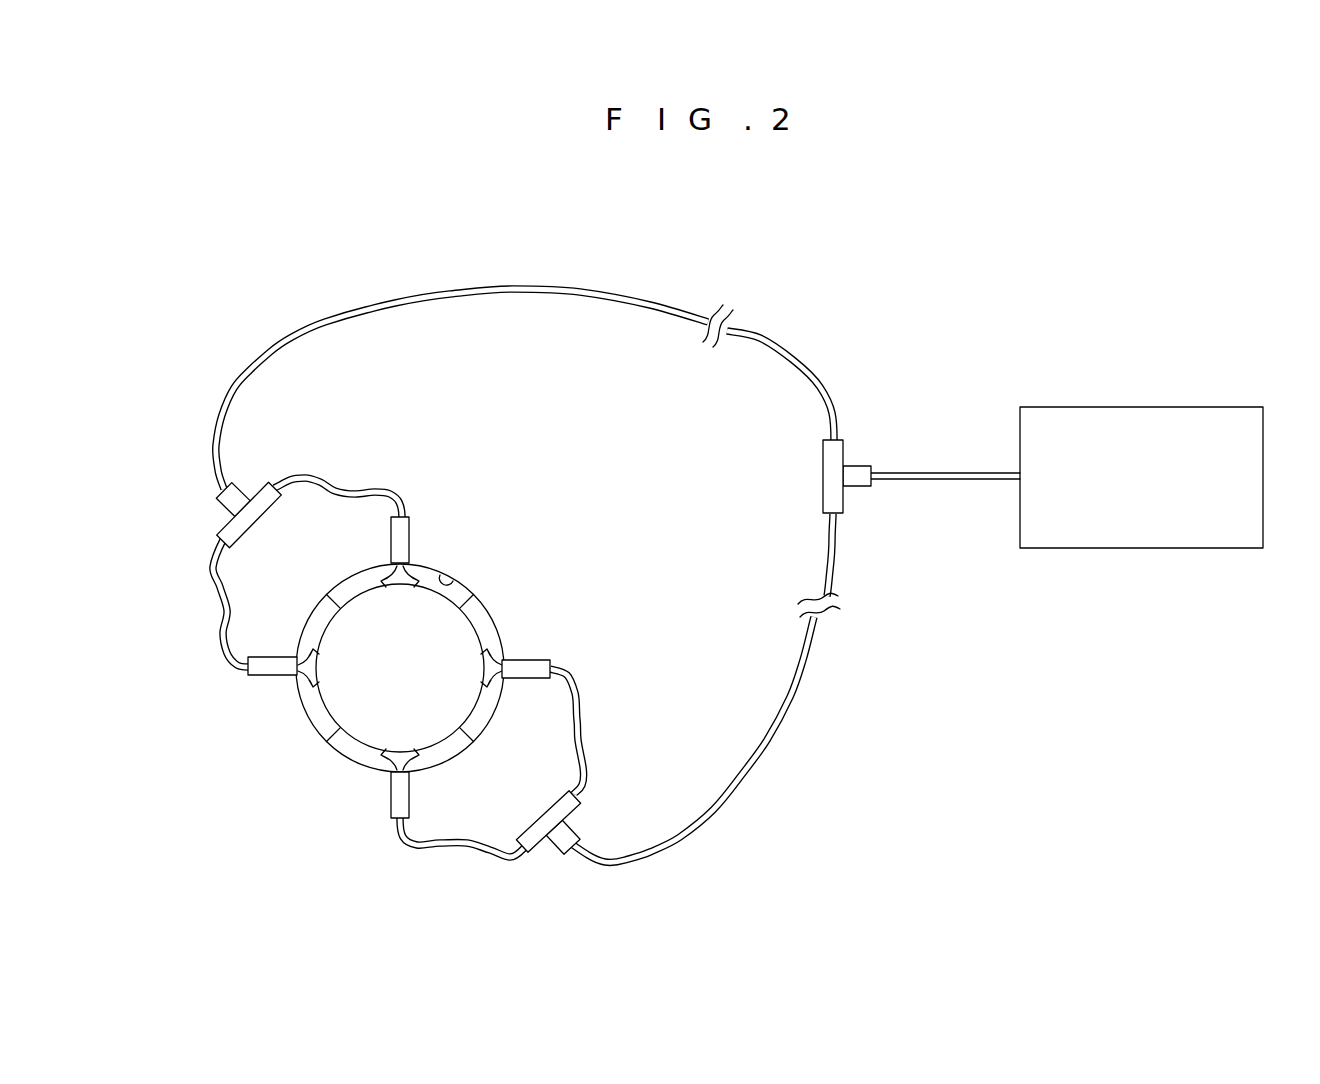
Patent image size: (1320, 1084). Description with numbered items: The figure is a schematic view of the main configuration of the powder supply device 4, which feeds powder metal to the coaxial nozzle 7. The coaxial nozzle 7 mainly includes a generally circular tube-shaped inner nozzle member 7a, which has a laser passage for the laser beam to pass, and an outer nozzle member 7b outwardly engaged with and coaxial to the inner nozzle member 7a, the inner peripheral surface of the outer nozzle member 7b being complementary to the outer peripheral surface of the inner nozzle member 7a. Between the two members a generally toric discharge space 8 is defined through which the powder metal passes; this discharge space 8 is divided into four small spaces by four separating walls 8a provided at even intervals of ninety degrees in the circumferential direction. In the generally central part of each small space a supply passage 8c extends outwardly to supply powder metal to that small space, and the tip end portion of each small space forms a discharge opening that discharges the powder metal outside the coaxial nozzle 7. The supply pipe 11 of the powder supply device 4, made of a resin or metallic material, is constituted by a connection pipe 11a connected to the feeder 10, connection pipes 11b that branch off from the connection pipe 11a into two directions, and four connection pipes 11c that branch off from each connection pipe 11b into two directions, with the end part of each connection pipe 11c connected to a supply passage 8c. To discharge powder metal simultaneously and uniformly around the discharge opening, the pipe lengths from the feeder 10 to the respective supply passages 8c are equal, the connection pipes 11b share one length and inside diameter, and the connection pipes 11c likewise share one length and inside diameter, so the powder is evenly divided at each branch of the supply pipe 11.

The powder supply device 4 is at (1093, 241).
The coaxial nozzle 7 is at (516, 561).
The inner nozzle member 7a is at (470, 628).
The outer nozzle member 7b is at (496, 606).
The discharge space 8 is at (452, 577).
The separating wall 8a is at (335, 597).
The supply passage 8c is at (411, 533).
The feeder 10 is at (1236, 406).
The supply pipe 11 is at (820, 326).
The connection pipe 11a is at (950, 473).
The connection pipe 11b is at (524, 285).
The connection pipe 11c is at (345, 486).